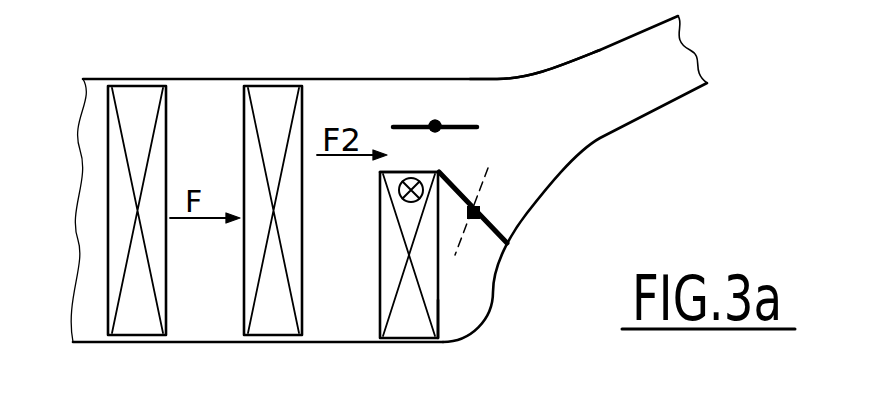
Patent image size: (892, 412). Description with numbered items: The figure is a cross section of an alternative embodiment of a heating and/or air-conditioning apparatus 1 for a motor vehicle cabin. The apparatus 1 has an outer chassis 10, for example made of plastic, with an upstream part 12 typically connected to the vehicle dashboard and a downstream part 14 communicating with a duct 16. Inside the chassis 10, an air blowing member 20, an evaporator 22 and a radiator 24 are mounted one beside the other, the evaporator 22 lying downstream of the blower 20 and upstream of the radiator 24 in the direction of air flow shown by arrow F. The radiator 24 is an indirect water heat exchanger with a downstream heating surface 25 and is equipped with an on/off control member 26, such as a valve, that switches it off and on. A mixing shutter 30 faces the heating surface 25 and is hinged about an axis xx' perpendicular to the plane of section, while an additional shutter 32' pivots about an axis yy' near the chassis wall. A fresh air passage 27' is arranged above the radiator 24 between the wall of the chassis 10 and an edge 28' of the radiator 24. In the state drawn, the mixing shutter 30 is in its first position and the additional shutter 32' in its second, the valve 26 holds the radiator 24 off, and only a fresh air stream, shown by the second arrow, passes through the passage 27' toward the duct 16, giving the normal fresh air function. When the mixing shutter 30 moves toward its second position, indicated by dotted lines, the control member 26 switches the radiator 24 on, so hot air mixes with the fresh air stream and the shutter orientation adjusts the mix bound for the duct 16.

The heating and/or air-conditioning apparatus 1 is at (198, 76).
The upstream part 12 is at (93, 100).
The outer chassis 10 is at (188, 343).
The downstream part 14 is at (572, 79).
The duct 16 is at (645, 95).
The air blowing member 20 is at (140, 318).
The evaporator 22 is at (273, 320).
The radiator 24 is at (410, 323).
The downstream heating surface 25 is at (440, 312).
The control member 26 is at (402, 198).
The fresh air passage 27' is at (535, 63).
The edge 28' is at (378, 104).
The mixing shutter 30 is at (508, 247).
The additional shutter 32' is at (435, 85).
The axis xx' is at (531, 211).
The axis yy' is at (544, 148).